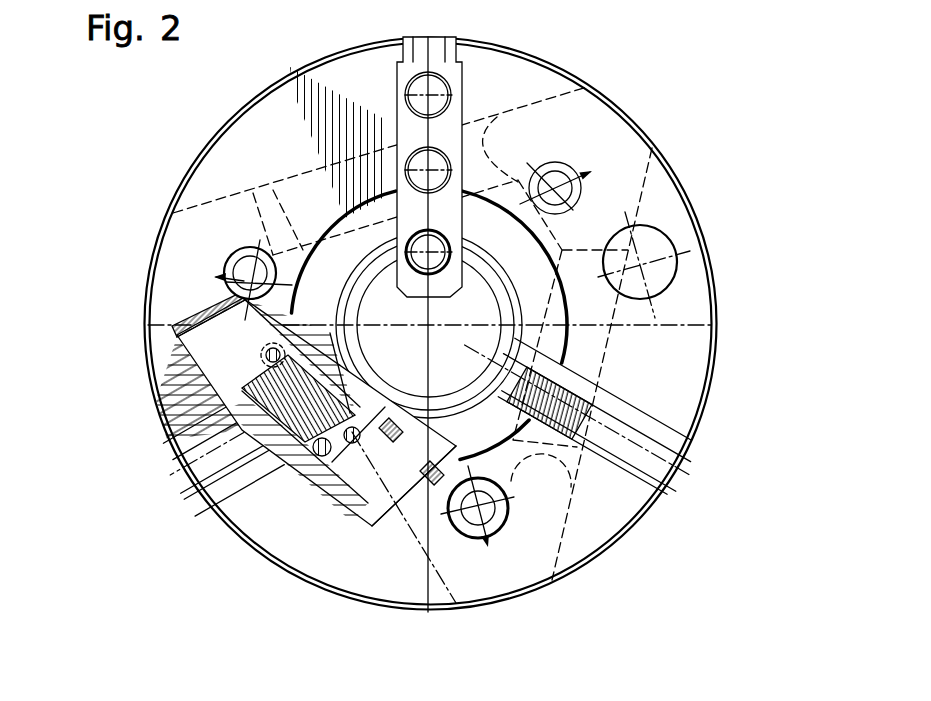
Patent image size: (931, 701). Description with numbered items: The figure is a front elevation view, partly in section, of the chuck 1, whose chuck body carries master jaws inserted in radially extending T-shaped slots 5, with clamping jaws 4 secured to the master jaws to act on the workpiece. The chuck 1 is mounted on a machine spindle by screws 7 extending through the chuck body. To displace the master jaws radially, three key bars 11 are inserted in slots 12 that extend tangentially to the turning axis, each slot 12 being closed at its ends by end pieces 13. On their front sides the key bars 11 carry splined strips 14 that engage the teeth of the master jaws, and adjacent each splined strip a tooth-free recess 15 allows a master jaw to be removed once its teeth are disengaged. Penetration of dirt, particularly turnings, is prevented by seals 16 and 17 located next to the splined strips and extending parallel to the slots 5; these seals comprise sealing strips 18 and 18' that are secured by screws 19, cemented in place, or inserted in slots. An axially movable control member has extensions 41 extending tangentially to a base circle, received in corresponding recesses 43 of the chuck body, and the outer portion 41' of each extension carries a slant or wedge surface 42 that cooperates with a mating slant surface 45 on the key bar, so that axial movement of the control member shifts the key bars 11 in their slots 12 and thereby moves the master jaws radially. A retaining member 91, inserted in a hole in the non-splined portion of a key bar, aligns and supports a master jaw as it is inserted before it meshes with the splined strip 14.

The chuck 1 is at (236, 573).
The clamping jaw 4 is at (455, 75).
The T-shaped slot 5 is at (178, 438).
The screw 7 is at (526, 552).
The key bar 11 is at (238, 198).
The slot 12 is at (383, 520).
The end piece 13 is at (232, 233).
The splined strip 14 is at (207, 492).
The tooth-free recess 15 is at (178, 308).
The seal 16 is at (278, 440).
The seal 17 is at (203, 302).
The sealing strip 18 is at (301, 487).
The sealing strip 18' is at (170, 315).
The screw 19 is at (372, 458).
The extension 41 is at (429, 332).
The outer portion 41' is at (373, 502).
The slant surface 42 is at (374, 412).
The recess 43 is at (446, 429).
The slant surface 45 is at (432, 557).
The retaining member 91 is at (240, 358).